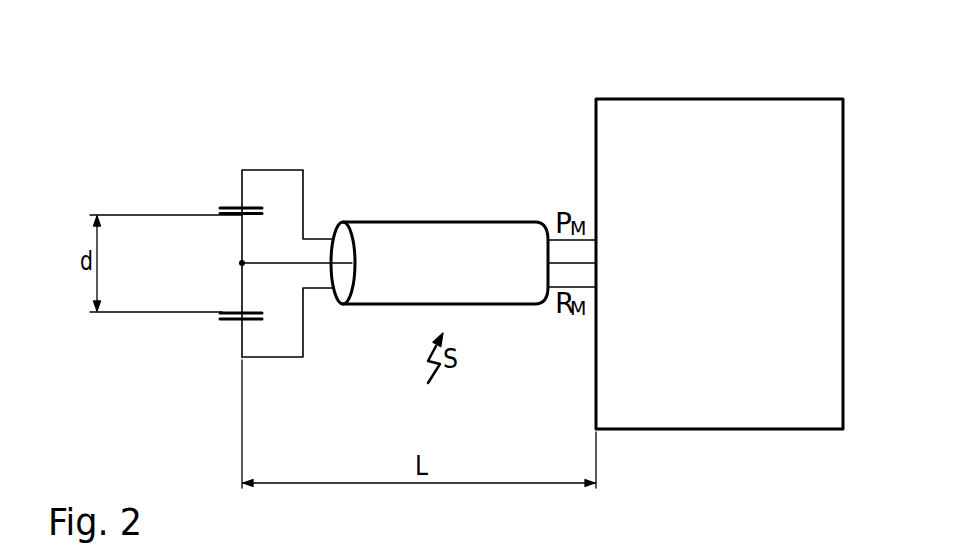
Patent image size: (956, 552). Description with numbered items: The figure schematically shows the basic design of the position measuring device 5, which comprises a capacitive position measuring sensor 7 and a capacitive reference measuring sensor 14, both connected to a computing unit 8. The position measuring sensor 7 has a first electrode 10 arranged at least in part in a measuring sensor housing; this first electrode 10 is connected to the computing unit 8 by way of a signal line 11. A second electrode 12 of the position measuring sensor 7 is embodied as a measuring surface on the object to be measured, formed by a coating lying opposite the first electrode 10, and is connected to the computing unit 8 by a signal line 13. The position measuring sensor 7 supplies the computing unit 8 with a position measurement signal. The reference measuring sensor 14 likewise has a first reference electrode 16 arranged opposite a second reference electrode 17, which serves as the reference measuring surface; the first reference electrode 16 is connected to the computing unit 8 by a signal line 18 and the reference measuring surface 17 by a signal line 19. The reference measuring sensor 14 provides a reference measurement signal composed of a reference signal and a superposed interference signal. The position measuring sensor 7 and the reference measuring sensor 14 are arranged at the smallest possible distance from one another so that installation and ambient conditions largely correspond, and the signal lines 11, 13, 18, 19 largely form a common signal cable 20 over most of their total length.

The position measuring device 5 is at (513, 118).
The capacitive position measuring sensor 7 is at (160, 164).
The computing unit 8 is at (715, 99).
The first electrode 10 is at (235, 203).
The signal line 11 is at (310, 198).
The second electrode 12 is at (240, 217).
The signal line 13 is at (239, 252).
The capacitive reference measuring sensor 14 is at (232, 384).
The first reference electrode 16 is at (226, 324).
The second reference electrode 17 is at (232, 312).
The signal line 18 is at (303, 343).
The signal line 19 is at (240, 281).
The common signal cable 20 is at (431, 219).